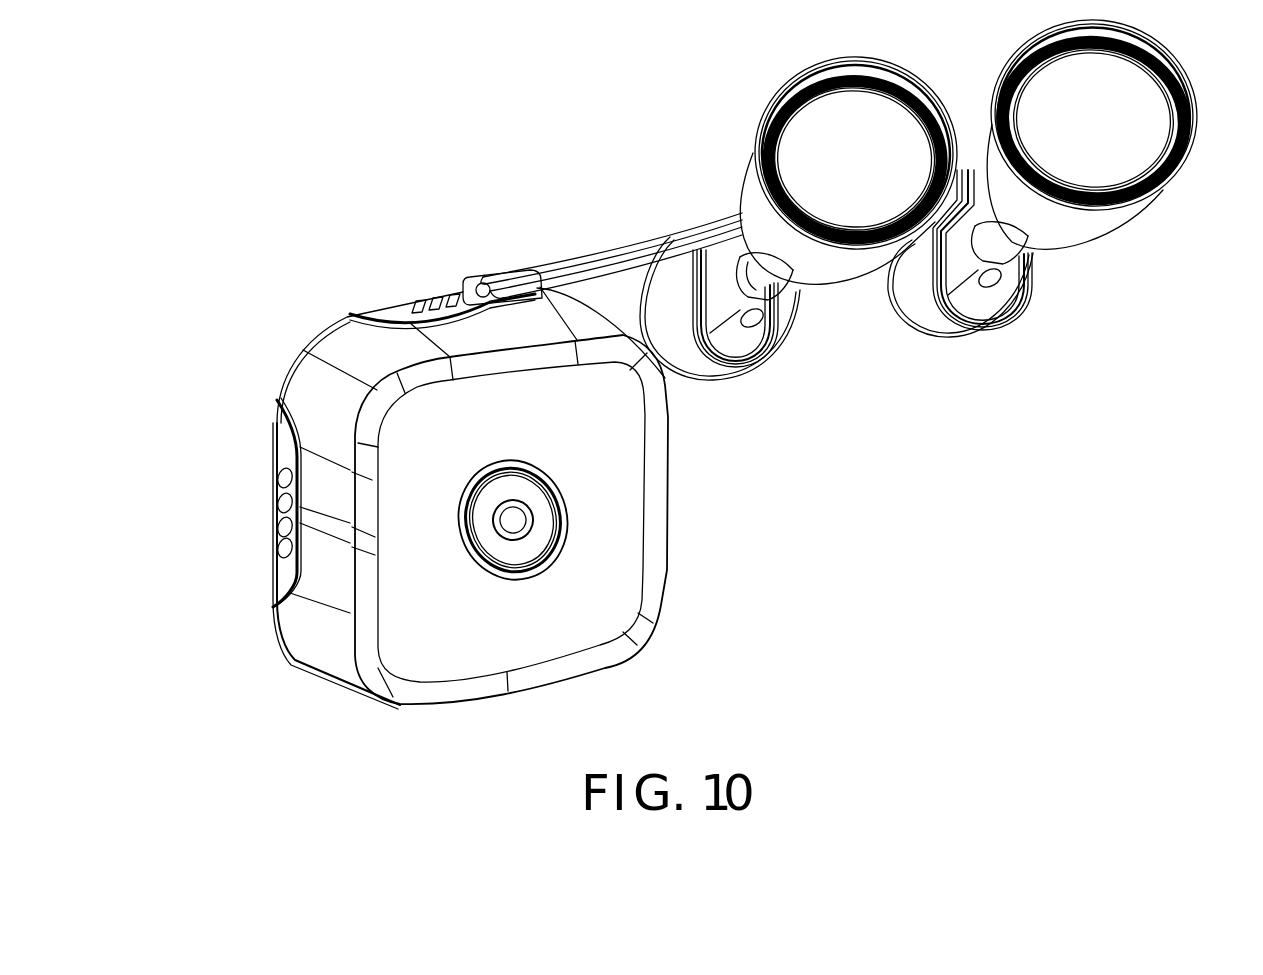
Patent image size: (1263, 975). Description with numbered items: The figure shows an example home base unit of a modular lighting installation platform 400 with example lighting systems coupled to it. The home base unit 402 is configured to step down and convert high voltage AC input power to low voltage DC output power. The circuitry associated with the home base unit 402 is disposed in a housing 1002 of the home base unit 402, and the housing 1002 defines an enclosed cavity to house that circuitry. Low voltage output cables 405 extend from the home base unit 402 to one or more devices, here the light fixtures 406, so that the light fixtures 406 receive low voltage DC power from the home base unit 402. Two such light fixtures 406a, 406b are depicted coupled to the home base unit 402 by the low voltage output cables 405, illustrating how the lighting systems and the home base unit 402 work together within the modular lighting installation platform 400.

The modular lighting installation platform 400 is at (195, 186).
The home base unit 402 is at (652, 563).
The low voltage output cables 405 is at (530, 278).
The light fixtures 406 is at (848, 378).
The light fixture 406a is at (755, 190).
The light fixture 406b is at (1107, 213).
The housing 1002 is at (323, 678).